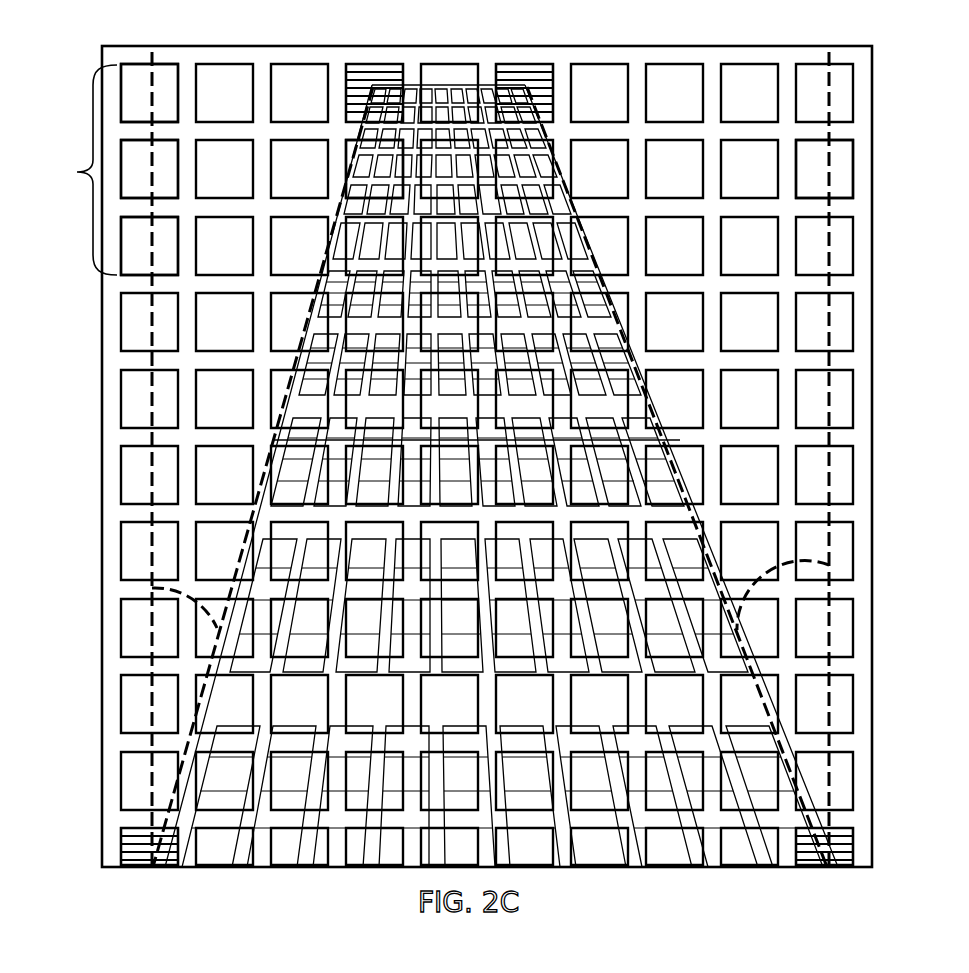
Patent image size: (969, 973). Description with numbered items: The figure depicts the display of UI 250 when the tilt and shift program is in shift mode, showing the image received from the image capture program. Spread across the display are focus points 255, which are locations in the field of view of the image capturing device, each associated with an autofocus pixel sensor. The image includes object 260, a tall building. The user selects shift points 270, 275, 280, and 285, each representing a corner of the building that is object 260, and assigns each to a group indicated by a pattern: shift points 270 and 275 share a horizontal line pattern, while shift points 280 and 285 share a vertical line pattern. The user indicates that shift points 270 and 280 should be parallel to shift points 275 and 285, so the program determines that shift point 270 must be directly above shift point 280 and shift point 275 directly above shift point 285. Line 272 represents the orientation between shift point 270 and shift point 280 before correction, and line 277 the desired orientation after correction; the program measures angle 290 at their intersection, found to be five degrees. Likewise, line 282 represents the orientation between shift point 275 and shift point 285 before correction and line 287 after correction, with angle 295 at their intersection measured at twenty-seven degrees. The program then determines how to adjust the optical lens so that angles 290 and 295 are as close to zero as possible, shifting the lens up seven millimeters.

The UI 250 is at (627, 46).
The focus points 255 is at (78, 172).
The object 260 is at (355, 243).
The shift point 270 is at (372, 64).
The line 272 is at (348, 165).
The shift point 275 is at (523, 64).
The line 277 is at (152, 312).
The shift point 280 is at (118, 850).
The line 282 is at (622, 315).
The shift point 285 is at (852, 850).
The line 287 is at (822, 180).
The angle 290 is at (195, 590).
The angle 295 is at (788, 567).